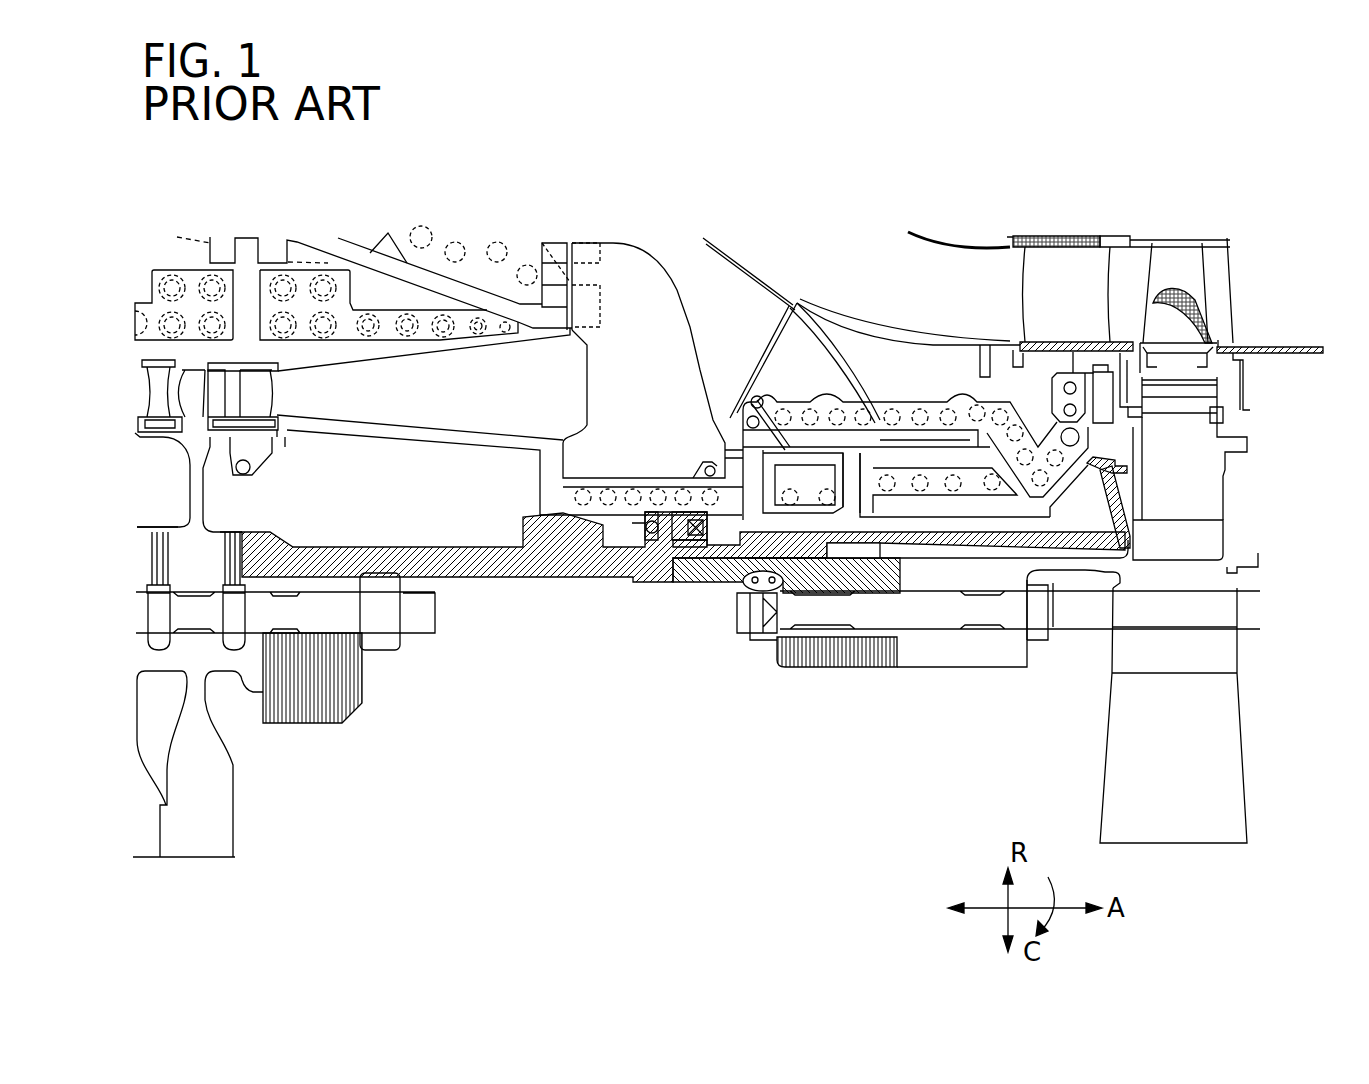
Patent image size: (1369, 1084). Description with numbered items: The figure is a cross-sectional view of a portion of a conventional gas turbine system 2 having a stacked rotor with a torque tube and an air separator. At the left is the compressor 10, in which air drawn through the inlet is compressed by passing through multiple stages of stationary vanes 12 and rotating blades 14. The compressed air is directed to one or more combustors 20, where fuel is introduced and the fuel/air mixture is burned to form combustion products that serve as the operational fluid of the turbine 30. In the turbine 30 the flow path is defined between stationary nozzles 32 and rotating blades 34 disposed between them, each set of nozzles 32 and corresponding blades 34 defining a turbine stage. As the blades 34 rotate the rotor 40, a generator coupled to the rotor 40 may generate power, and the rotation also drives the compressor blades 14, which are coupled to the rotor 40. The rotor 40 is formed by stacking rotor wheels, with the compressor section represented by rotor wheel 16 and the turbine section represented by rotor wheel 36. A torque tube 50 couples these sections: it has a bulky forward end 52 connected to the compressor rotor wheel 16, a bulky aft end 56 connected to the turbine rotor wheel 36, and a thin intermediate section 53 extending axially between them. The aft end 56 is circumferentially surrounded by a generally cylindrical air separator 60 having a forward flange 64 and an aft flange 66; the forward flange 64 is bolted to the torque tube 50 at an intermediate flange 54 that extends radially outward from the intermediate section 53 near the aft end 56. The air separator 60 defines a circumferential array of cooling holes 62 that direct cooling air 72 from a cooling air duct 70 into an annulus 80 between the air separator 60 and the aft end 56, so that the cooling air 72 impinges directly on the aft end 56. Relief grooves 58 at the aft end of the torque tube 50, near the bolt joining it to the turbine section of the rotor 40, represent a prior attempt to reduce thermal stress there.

The gas turbine system 2 is at (256, 187).
The compressor 10 is at (222, 246).
The stationary vanes 12 is at (154, 391).
The rotating blades 14 is at (197, 393).
The rotor wheel 16 is at (193, 542).
The combustors 20 is at (938, 232).
The turbine 30 is at (1110, 185).
The stationary nozzles 32 is at (1062, 302).
The rotating blades 34 is at (1177, 273).
The rotor wheel 36 is at (1187, 483).
The rotor 40 is at (240, 523).
The torque tube 50 is at (397, 541).
The forward end 52 is at (340, 683).
The intermediate section 53 is at (473, 580).
The intermediate flange 54 is at (668, 538).
The aft end 56 is at (830, 668).
The relief grooves 58 is at (745, 581).
The air separator 60 is at (982, 553).
The cooling holes 62 is at (860, 537).
The forward flange 64 is at (687, 545).
The aft flange 66 is at (1090, 463).
The cooling air duct 70 is at (837, 352).
The cooling air 72 is at (855, 499).
The annulus 80 is at (893, 550).